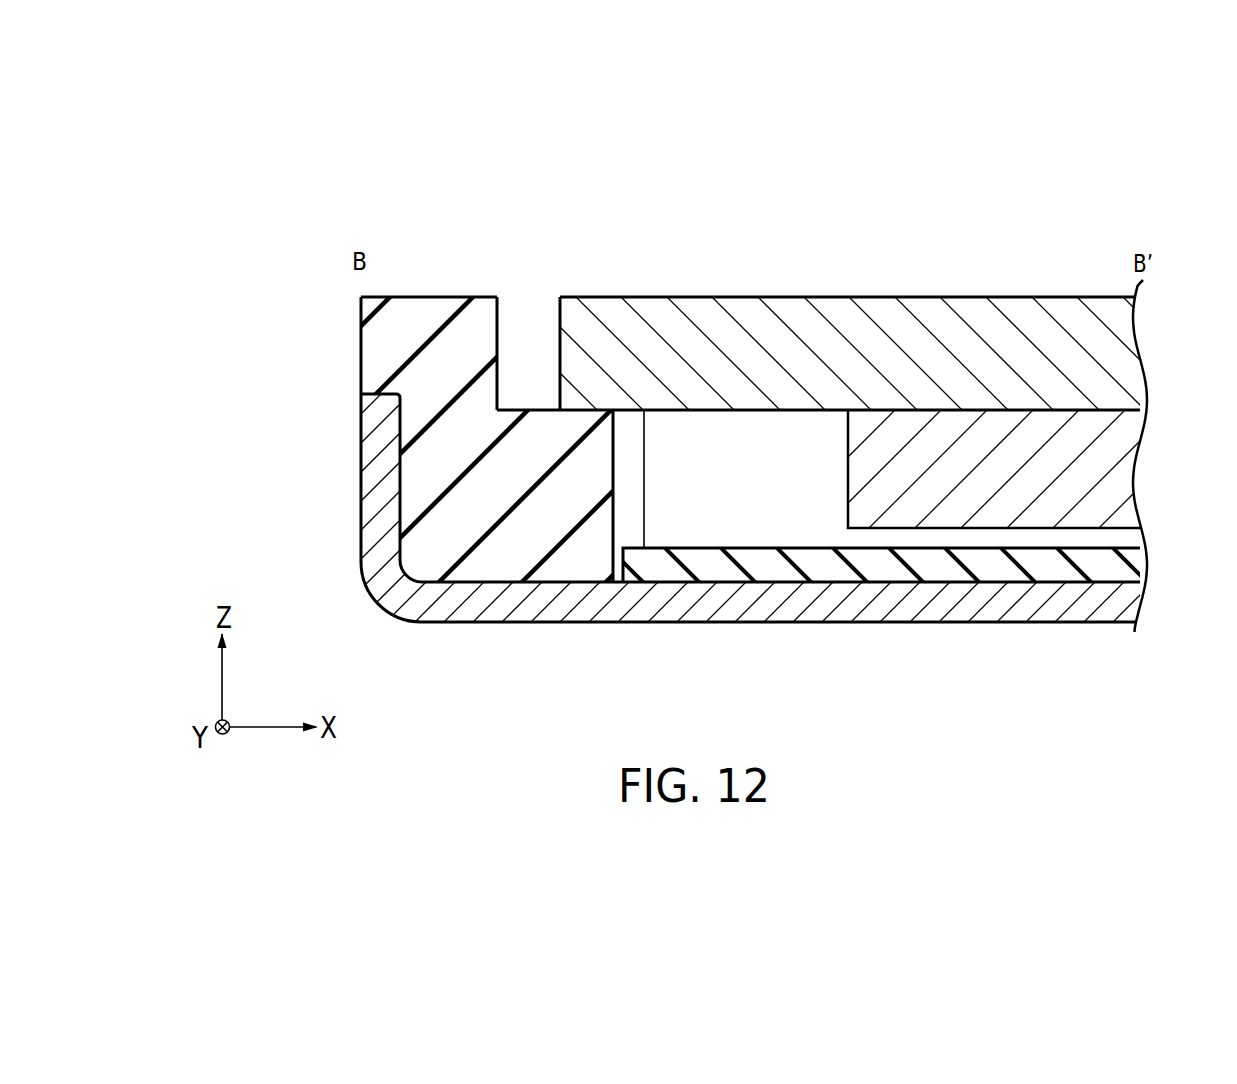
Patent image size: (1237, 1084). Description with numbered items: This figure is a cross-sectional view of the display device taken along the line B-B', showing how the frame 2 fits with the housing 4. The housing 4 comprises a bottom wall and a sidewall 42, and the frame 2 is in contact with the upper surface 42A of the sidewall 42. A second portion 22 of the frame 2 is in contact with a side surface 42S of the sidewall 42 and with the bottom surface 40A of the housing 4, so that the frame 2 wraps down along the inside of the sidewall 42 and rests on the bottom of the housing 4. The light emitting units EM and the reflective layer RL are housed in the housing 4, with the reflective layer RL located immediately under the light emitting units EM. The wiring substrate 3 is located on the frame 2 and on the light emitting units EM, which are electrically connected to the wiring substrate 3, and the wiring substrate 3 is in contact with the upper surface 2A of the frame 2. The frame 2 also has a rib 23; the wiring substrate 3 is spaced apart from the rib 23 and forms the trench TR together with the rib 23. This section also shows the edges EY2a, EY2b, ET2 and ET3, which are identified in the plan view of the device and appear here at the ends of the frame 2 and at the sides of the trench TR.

The frame 2 is at (495, 548).
The upper surface of the frame 2A is at (530, 405).
The second portion 22 is at (560, 562).
The rib 23 is at (374, 342).
The wiring substrate 3 is at (1122, 362).
The housing 4 is at (1010, 610).
The bottom surface of the housing 40A is at (459, 573).
The sidewall 42 is at (371, 503).
The upper surface of the sidewall 42A is at (391, 391).
The side surface of the sidewall 42S is at (403, 499).
The light emitting unit EM is at (1112, 477).
The reflective layer RL is at (1122, 567).
The trench TR is at (527, 304).
The edge ET2 is at (494, 291).
The edge ET3 is at (565, 290).
The edge EY2a is at (620, 416).
The edge EY2b is at (355, 397).